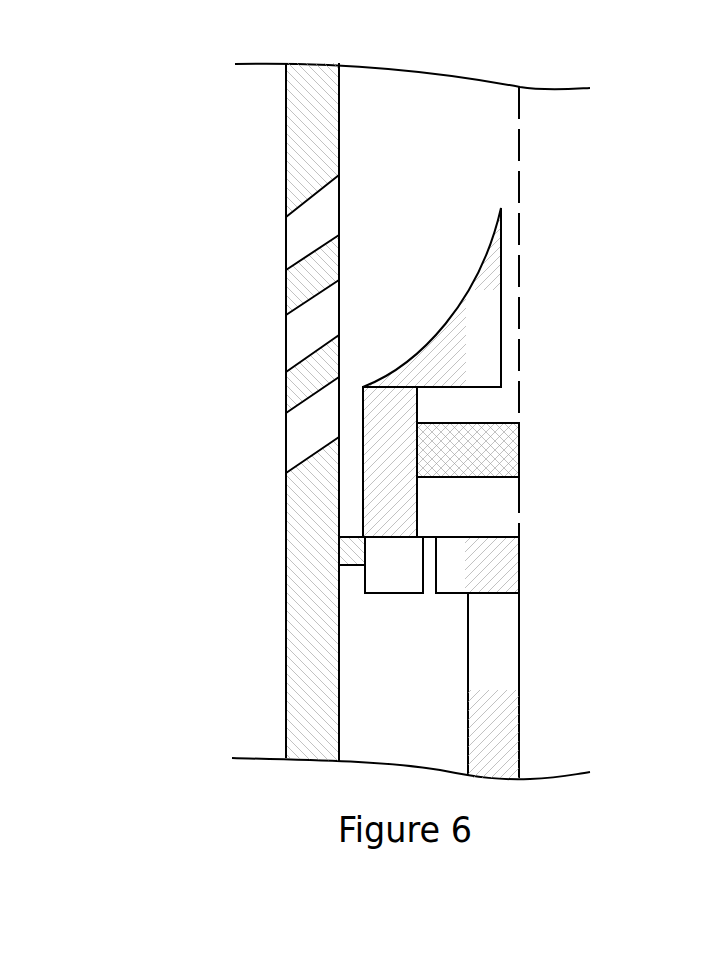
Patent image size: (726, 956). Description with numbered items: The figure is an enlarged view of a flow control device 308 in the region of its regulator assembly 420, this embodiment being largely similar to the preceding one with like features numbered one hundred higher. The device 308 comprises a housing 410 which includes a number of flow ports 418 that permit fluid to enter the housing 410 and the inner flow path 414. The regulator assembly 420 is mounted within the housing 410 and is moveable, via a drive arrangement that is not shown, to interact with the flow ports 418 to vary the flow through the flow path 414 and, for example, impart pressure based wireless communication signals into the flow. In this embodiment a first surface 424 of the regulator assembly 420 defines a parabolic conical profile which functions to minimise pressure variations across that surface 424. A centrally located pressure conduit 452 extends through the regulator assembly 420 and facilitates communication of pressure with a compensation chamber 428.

The flow control device 308 is at (212, 89).
The housing 410 is at (310, 518).
The inner flow path 414 is at (429, 134).
The flow ports 418 is at (307, 437).
The regulator assembly 420 is at (542, 449).
The first surface 424 is at (483, 253).
The compensation chamber 428 is at (403, 674).
The pressure conduit 452 is at (508, 295).